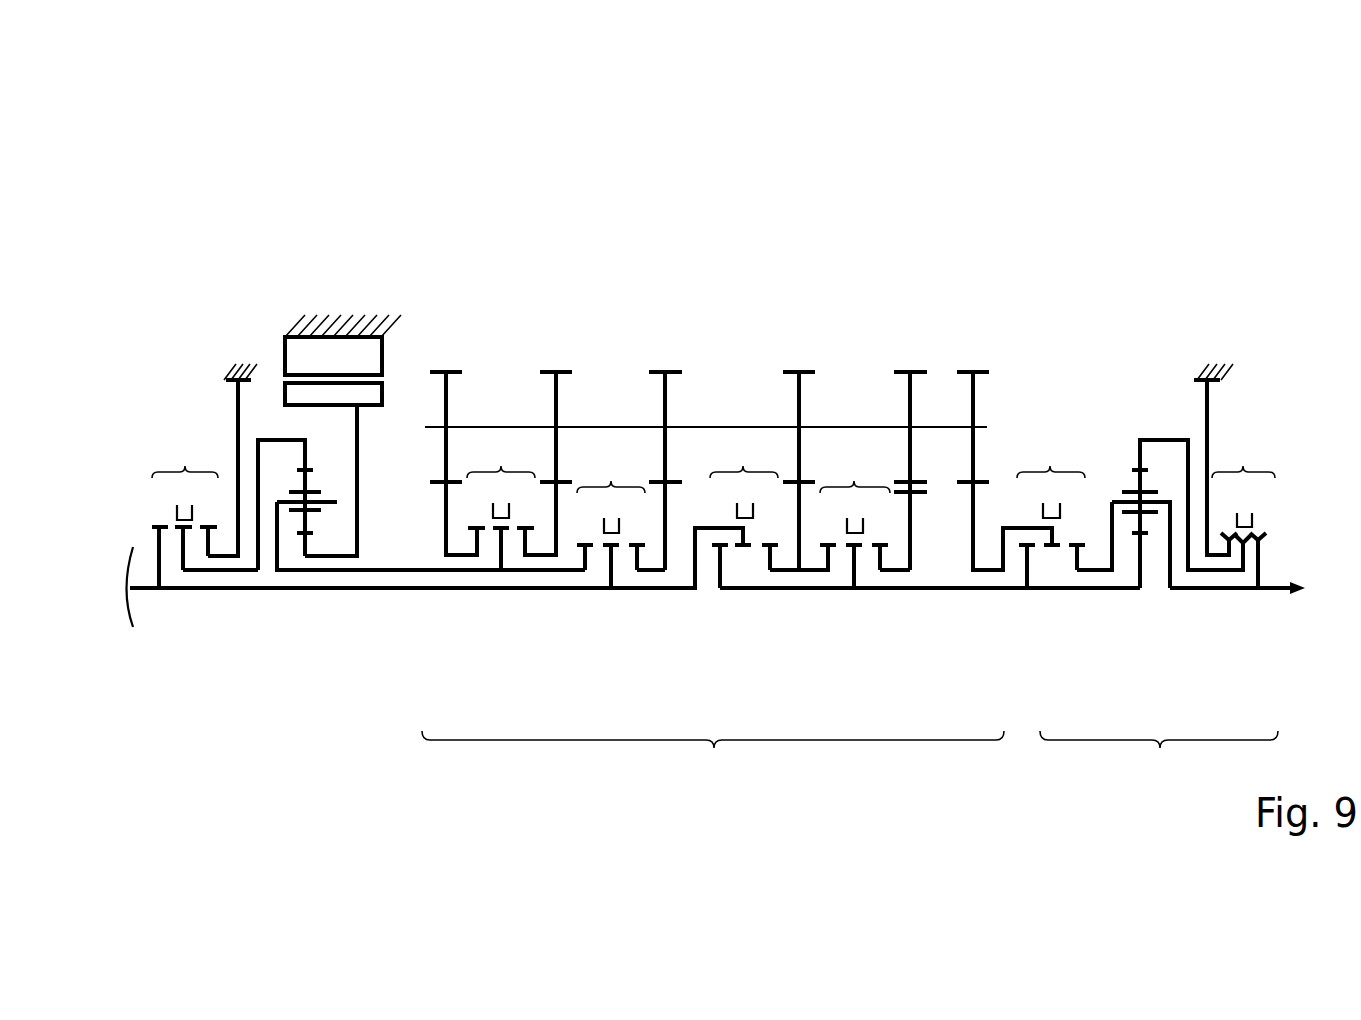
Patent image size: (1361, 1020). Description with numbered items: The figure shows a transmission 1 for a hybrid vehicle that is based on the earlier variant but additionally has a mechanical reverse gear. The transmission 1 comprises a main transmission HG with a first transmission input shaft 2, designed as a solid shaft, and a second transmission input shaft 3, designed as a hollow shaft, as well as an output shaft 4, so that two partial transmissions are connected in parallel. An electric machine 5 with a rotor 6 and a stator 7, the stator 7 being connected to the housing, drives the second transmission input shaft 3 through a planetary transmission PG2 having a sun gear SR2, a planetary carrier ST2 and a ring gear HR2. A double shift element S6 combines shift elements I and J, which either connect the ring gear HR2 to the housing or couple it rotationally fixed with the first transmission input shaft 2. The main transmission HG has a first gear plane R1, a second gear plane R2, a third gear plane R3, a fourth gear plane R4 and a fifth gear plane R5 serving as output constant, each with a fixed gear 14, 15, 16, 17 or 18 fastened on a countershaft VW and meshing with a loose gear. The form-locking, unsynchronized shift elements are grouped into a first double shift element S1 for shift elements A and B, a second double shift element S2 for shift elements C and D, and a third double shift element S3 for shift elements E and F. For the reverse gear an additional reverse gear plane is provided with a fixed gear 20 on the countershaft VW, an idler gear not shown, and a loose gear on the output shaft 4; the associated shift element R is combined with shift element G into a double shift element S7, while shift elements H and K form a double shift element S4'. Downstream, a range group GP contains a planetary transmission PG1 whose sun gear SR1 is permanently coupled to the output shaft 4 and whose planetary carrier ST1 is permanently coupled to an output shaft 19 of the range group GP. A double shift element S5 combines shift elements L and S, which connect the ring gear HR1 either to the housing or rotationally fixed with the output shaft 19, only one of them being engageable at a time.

The transmission 1 is at (817, 215).
The first transmission input shaft 2 is at (387, 593).
The second transmission input shaft 3 is at (430, 572).
The output shaft 4 is at (1012, 590).
The electric machine 5 is at (345, 298).
The rotor 6 is at (370, 397).
The stator 7 is at (302, 358).
The fixed gear 14 is at (448, 403).
The fixed gear 15 is at (556, 407).
The fixed gear 16 is at (665, 405).
The fixed gear 17 is at (797, 402).
The fixed gear 18 is at (970, 405).
The output shaft of the range group 19 is at (1277, 587).
The fixed gear 20 is at (907, 402).
The ring gear HR2 is at (277, 437).
The planetary carrier ST2 is at (283, 500).
The sun gear SR2 is at (307, 542).
The planetary transmission PG2 is at (306, 605).
The double shift element S6 is at (185, 466).
The first double shift element S1 is at (501, 466).
The second double shift element S2 is at (611, 481).
The third double shift element S3 is at (743, 466).
The double shift element S7 is at (854, 481).
The double shift element S4' is at (1059, 446).
The double shift element S5 is at (1243, 466).
The first gear plane R1 is at (460, 377).
The second gear plane R2 is at (544, 377).
The third gear plane R3 is at (655, 384).
The fourth gear plane R4 is at (786, 384).
The fifth gear plane R5 is at (998, 384).
The shift element R is at (893, 384).
The countershaft VW is at (703, 427).
The planetary carrier ST1 is at (1122, 497).
The ring gear HR1 is at (1163, 440).
The sun gear SR1 is at (1142, 562).
The planetary transmission PG1 is at (1140, 412).
The main transmission HG is at (713, 762).
The range group GP is at (1159, 762).